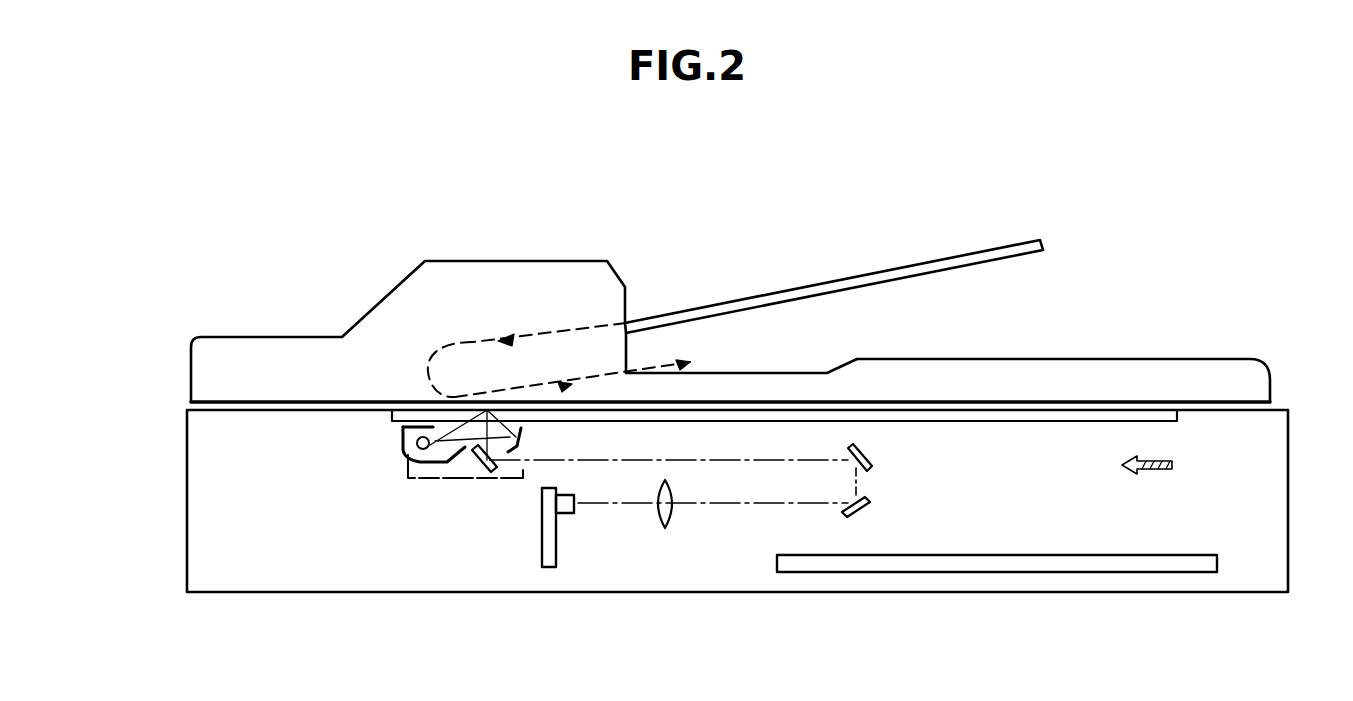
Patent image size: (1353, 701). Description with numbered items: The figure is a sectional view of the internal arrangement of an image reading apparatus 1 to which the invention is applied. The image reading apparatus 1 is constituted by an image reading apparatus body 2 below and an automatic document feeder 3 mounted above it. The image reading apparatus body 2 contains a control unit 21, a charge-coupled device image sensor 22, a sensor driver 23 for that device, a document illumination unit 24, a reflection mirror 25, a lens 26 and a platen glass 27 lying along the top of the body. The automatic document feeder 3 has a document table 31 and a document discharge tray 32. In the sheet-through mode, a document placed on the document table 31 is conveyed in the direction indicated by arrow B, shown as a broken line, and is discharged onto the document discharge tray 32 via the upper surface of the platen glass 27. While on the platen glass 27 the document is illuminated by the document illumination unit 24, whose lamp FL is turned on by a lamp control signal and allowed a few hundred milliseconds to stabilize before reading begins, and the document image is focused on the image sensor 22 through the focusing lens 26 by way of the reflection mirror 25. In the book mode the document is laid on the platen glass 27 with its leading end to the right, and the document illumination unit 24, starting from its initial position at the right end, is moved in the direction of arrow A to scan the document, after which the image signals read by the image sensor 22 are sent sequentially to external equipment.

The image reading apparatus 1 is at (1132, 244).
The image reading apparatus body 2 is at (1173, 592).
The automatic document feeder 3 is at (1103, 368).
The document table 31 is at (873, 268).
The document discharge tray 32 is at (808, 372).
The control unit 21 is at (845, 572).
The CCD 22 is at (577, 514).
The CCD driver 23 is at (540, 542).
The document illumination unit 24 is at (457, 465).
The reflection mirror 25 is at (864, 485).
The lens 26 is at (667, 520).
The platen glass 27 is at (1046, 421).
The lamp FL is at (403, 452).
The arrow A is at (1161, 466).
The arrow B is at (559, 352).